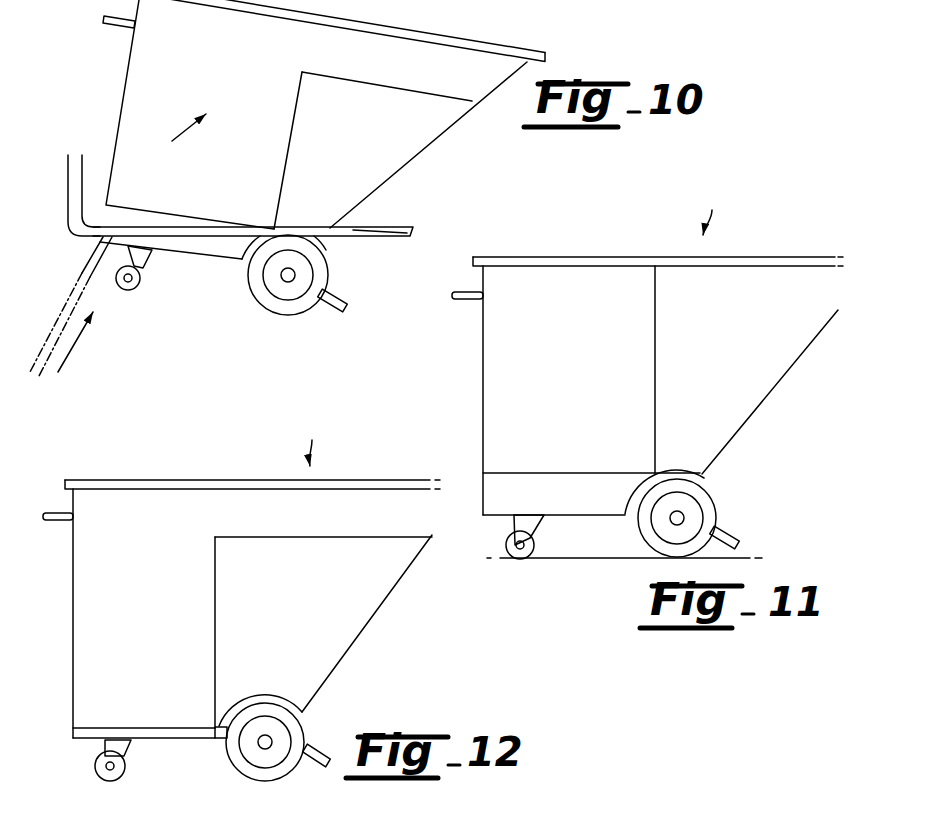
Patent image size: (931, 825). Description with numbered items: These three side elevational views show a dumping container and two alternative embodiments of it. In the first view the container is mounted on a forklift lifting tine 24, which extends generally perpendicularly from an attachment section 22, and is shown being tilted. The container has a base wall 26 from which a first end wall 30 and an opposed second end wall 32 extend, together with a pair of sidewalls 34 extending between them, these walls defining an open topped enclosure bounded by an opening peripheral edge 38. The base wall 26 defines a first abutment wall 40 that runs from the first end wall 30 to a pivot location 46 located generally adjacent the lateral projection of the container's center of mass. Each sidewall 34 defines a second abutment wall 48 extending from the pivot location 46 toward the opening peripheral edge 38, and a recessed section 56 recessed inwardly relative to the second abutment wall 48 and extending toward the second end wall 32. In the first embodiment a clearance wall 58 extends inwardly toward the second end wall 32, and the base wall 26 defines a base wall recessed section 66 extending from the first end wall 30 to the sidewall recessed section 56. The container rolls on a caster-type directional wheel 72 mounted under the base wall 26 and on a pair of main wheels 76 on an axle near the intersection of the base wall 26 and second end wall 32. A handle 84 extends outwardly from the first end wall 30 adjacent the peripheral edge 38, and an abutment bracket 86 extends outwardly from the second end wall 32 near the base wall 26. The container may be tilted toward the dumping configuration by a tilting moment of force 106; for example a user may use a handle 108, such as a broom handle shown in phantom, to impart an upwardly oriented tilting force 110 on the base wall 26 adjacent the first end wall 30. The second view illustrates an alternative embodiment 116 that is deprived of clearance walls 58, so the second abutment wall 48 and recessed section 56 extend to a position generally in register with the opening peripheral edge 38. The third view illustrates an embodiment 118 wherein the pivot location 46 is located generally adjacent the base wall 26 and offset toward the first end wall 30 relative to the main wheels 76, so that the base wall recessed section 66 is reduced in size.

In FIG. 10, the attachment section 22 is at (67, 204).
In FIG. 10, the lifting tine 24 is at (363, 238).
In FIG. 10, the base wall 26 is at (223, 270).
In FIG. 12, the base wall 26 is at (88, 741).
In FIG. 10, the first end wall 30 is at (121, 97).
In FIG. 10, the second end wall 32 is at (424, 152).
In FIG. 11, the second end wall 32 is at (770, 392).
In FIG. 12, the second end wall 32 is at (372, 606).
In FIG. 10, the sidewall 34 is at (378, 48).
In FIG. 11, the sidewall 34 is at (573, 287).
In FIG. 12, the sidewall 34 is at (141, 512).
In FIG. 10, the opening peripheral edge 38 is at (493, 38).
In FIG. 11, the opening peripheral edge 38 is at (738, 253).
In FIG. 12, the opening peripheral edge 38 is at (186, 478).
In FIG. 10, the first abutment wall 40 is at (142, 210).
In FIG. 11, the first abutment wall 40 is at (592, 479).
In FIG. 12, the first abutment wall 40 is at (181, 732).
In FIG. 11, the pivot location 46 is at (700, 474).
In FIG. 12, the pivot location 46 is at (220, 740).
In FIG. 10, the second abutment wall 48 is at (283, 195).
In FIG. 11, the second abutment wall 48 is at (659, 388).
In FIG. 12, the second abutment wall 48 is at (219, 640).
In FIG. 10, the recessed section 56 is at (382, 157).
In FIG. 11, the recessed section 56 is at (766, 352).
In FIG. 12, the recessed section 56 is at (333, 622).
In FIG. 10, the clearance wall 58 is at (443, 101).
In FIG. 12, the clearance wall 58 is at (386, 542).
In FIG. 11, the base wall recessed section 66 is at (510, 500).
In FIG. 12, the base wall recessed section 66 is at (90, 734).
In FIG. 10, the directional wheel 72 is at (142, 279).
In FIG. 11, the directional wheel 72 is at (525, 537).
In FIG. 12, the directional wheel 72 is at (113, 760).
In FIG. 10, the main wheel 76 is at (283, 309).
In FIG. 11, the main wheel 76 is at (656, 545).
In FIG. 12, the main wheel 76 is at (290, 717).
In FIG. 10, the handle 84 is at (105, 30).
In FIG. 11, the handle 84 is at (463, 300).
In FIG. 12, the handle 84 is at (55, 521).
In FIG. 10, the abutment bracket 86 is at (346, 306).
In FIG. 11, the abutment bracket 86 is at (740, 537).
In FIG. 12, the abutment bracket 86 is at (313, 751).
In FIG. 10, the tilting moment of force 106 is at (178, 134).
In FIG. 10, the handle 108 is at (84, 293).
In FIG. 10, the tilting force 110 is at (72, 356).
In FIG. 11, the alternative embodiment 116 is at (719, 205).
In FIG. 12, the alternative embodiment 118 is at (323, 438).